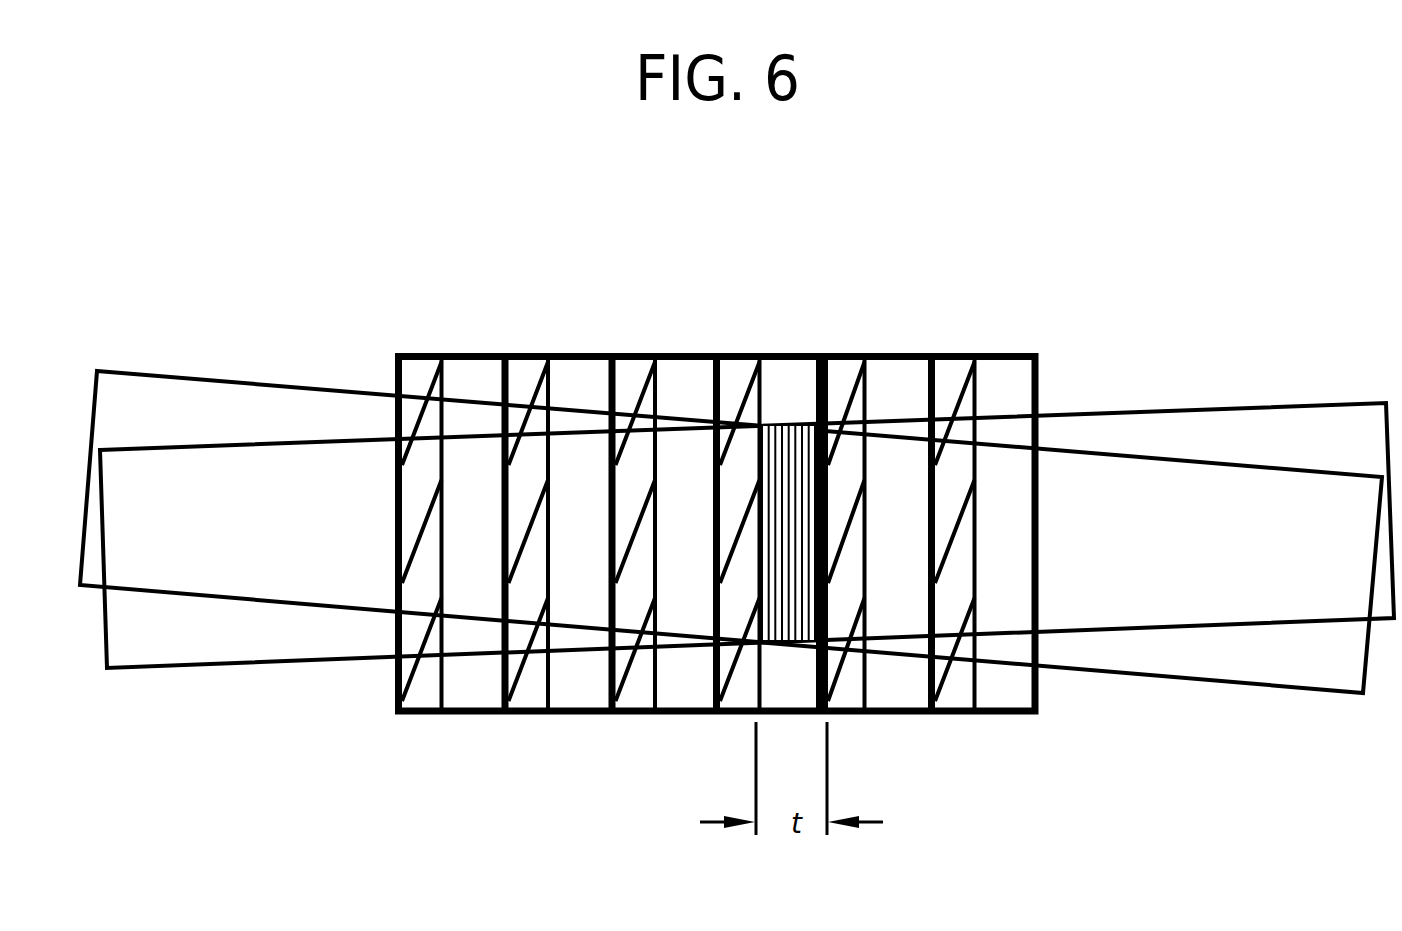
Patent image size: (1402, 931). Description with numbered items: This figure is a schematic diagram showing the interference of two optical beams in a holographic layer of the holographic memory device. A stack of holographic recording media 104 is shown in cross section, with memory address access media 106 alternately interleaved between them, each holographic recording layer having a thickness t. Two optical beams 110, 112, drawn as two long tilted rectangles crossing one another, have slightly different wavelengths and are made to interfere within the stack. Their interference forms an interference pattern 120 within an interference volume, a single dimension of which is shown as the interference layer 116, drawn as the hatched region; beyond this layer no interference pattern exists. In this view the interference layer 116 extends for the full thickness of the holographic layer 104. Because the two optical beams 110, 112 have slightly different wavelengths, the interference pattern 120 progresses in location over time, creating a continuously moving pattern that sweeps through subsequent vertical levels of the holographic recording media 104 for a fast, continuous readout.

The holographic recording media 104 is at (888, 698).
The memory address access media 106 is at (627, 714).
The optical beam 110 is at (213, 652).
The optical beam 112 is at (217, 390).
The interference layer 116 is at (832, 422).
The interference pattern 120 is at (785, 425).